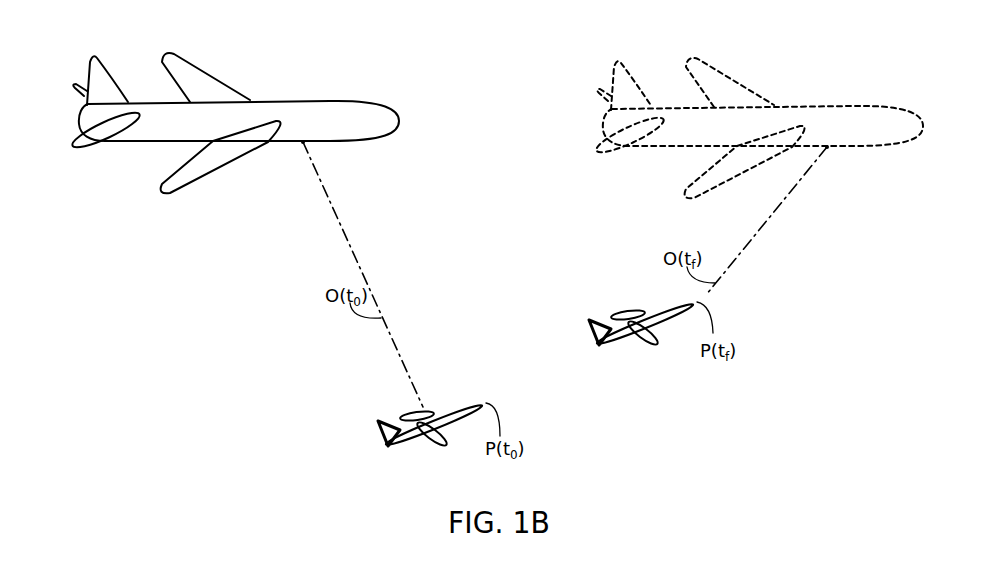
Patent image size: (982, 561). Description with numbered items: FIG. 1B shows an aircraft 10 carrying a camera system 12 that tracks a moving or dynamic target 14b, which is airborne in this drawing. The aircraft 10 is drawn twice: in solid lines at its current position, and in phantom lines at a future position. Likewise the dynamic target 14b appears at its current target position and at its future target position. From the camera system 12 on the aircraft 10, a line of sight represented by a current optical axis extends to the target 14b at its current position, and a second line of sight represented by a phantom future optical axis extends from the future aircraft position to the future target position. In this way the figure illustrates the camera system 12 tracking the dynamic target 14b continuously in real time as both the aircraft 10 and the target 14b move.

The aircraft 10 is at (82, 67).
The camera system 12 is at (303, 147).
The dynamic target 14b is at (378, 432).